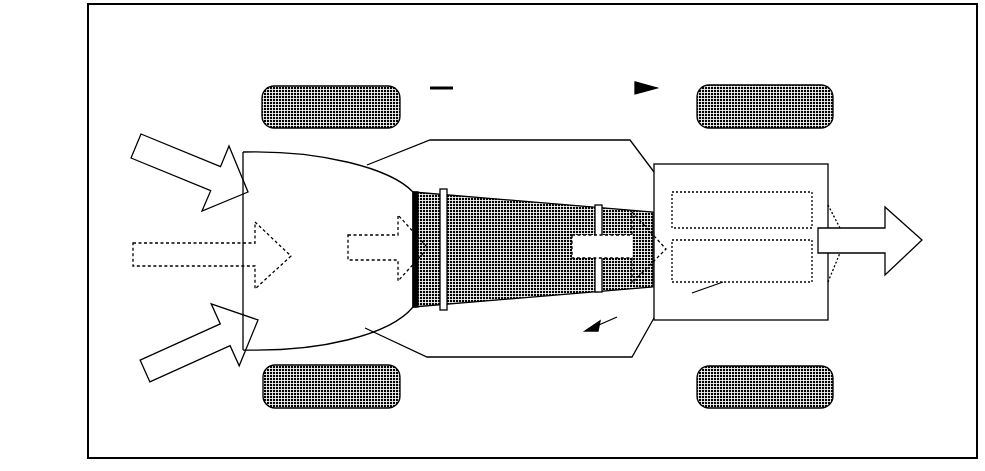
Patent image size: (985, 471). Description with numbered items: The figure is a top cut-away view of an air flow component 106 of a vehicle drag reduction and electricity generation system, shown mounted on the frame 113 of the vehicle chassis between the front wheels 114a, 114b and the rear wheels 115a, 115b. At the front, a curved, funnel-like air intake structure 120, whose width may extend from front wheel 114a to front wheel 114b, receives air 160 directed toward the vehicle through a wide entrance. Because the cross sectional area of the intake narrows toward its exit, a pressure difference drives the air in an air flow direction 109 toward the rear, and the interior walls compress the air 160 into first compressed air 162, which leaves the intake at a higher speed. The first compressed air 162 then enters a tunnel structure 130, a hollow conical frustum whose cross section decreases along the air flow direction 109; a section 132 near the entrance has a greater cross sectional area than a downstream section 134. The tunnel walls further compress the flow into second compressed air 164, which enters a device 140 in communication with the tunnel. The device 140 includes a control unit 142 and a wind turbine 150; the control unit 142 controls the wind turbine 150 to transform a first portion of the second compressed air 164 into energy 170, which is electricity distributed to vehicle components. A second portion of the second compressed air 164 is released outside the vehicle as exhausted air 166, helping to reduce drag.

The air flow component 106 is at (695, 46).
The air flow direction 109 is at (543, 89).
The frame 113 is at (523, 357).
The front wheel 114a is at (331, 107).
The front wheel 114b is at (331, 386).
The rear wheel 115a is at (765, 106).
The rear wheel 115b is at (765, 387).
The air intake structure 120 is at (286, 189).
The tunnel structure 130 is at (517, 234).
The section 132 is at (447, 228).
The section 134 is at (598, 277).
The device 140 is at (704, 185).
The control unit 142 is at (742, 210).
The wind turbine 150 is at (742, 261).
The air 160 is at (168, 179).
The first compressed air 162 is at (368, 283).
The second compressed air 164 is at (608, 255).
The exhausted air 166 is at (918, 283).
The energy 170 is at (654, 306).